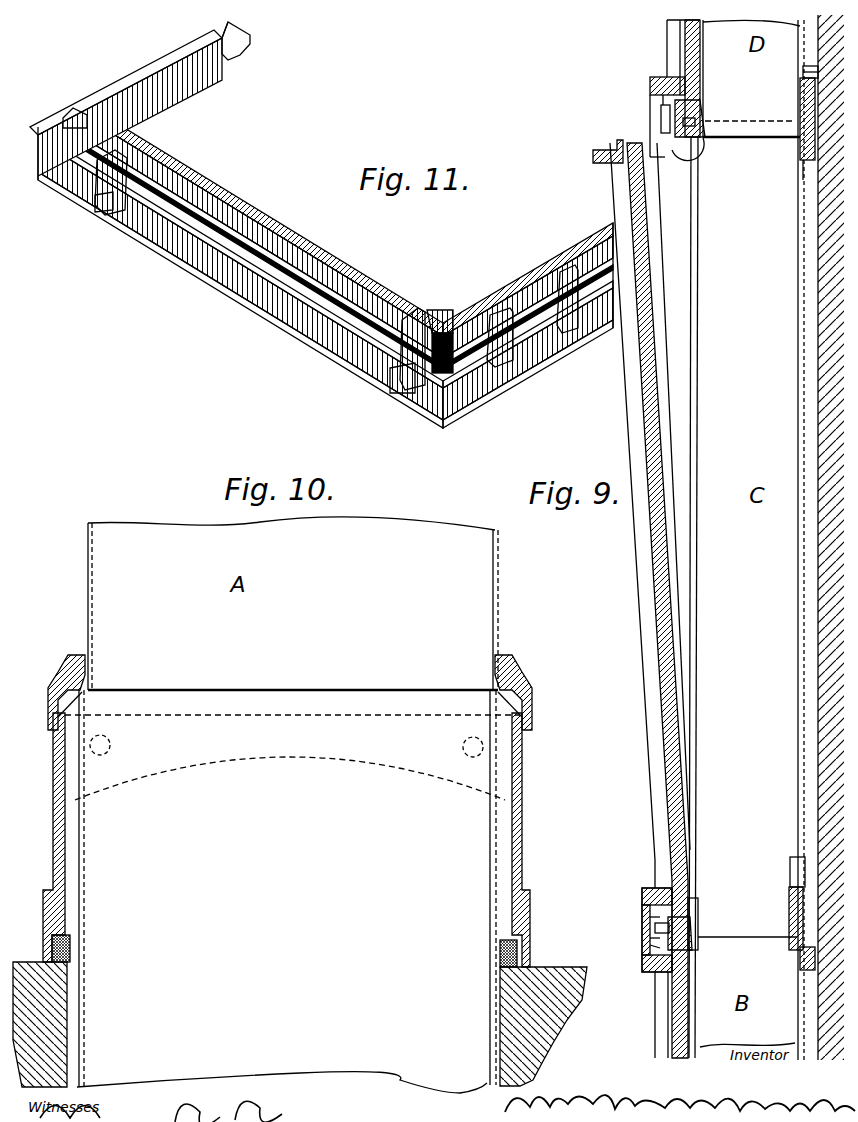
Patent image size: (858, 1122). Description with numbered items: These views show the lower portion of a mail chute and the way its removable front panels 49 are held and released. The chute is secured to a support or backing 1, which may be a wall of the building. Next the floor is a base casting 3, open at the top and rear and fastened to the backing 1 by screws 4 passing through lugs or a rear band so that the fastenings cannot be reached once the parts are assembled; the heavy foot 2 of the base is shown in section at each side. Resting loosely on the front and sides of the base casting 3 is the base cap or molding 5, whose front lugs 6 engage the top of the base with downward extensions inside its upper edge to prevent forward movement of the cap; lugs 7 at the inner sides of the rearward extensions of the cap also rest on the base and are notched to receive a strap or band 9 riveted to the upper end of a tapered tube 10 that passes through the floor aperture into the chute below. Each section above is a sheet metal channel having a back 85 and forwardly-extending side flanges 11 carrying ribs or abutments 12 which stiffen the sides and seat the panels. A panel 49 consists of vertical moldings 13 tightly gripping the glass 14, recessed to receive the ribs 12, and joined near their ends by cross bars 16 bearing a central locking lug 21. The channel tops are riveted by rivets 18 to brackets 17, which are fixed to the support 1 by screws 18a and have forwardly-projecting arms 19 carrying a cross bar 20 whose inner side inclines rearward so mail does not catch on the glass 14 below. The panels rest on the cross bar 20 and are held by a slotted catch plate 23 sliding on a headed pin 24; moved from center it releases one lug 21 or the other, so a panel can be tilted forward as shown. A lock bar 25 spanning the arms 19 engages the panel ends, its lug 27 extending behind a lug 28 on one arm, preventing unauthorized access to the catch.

In FIG. 9, the support or backing 1 is at (818, 772).
In FIG. 10, the sill foot 2 is at (306, 1024).
In FIG. 10, the base casting 3 is at (522, 842).
In FIG. 10, the screws 4 is at (103, 753).
In FIG. 11, the base cap or molding 5 is at (357, 269).
In FIG. 11, the lugs 6 is at (105, 212).
In FIG. 11, the lugs 7 is at (500, 345).
In FIG. 10, the lugs 7 is at (533, 696).
In FIG. 10, the strap or band 9 is at (62, 668).
In FIG. 10, the tapered tube or section 10 is at (489, 877).
In FIG. 10, the forwardly-extending flanges 11 is at (498, 606).
In FIG. 9, the forwardly-extending flanges 11 is at (793, 537).
In FIG. 9, the projections, ribs or abutments 12 is at (694, 708).
In FIG. 9, the vertically-extending moldings 13 is at (676, 38).
In FIG. 9, the glass 14 is at (703, 55).
In FIG. 9, the cross bars 16 is at (646, 980).
In FIG. 9, the brackets 17 is at (800, 106).
In FIG. 9, the rivets 18 is at (800, 150).
In FIG. 9, the screws 18a is at (803, 88).
In FIG. 9, the forwardly-projecting arms 19 is at (665, 100).
In FIG. 9, the cross bar 20 is at (706, 114).
In FIG. 9, the locking lug or projection 21 is at (622, 140).
In FIG. 9, the plate 23 is at (700, 148).
In FIG. 9, the headed pin or projection 24 is at (700, 128).
In FIG. 9, the lock bar or plate 25 is at (652, 938).
In FIG. 9, the lug 27 is at (660, 946).
In FIG. 9, the lug 28 is at (661, 116).
In FIG. 9, the removable front portions or panels 49 is at (642, 655).
In FIG. 9, the back 85 is at (798, 584).